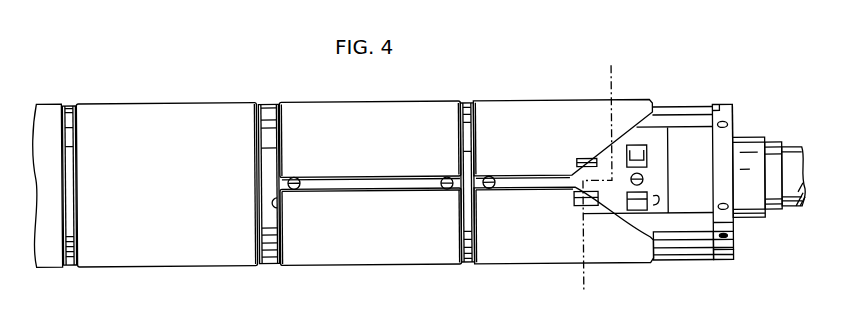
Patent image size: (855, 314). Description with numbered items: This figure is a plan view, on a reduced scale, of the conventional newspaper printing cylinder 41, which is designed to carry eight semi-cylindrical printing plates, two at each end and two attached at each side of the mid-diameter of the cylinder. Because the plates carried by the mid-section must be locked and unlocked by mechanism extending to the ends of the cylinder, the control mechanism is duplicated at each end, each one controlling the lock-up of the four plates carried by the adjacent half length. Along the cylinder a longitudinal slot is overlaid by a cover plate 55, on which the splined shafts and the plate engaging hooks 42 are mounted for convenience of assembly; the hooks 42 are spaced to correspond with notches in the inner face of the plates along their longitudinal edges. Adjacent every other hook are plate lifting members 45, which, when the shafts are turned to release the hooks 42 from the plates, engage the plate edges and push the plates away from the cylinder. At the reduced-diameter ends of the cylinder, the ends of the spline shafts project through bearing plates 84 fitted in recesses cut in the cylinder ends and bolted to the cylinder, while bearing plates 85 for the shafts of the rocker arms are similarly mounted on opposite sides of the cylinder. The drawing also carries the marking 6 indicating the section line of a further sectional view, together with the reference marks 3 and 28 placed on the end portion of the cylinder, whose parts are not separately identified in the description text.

The tool housing 3 is at (668, 98).
The section line 6- 6 is at (612, 70).
The drive shaft 28 is at (783, 147).
The cylinder 41 is at (667, 243).
The plate engaging hooks 42 is at (645, 158).
The plate lifting members 45 is at (628, 203).
The cover plate 55 is at (660, 181).
The bearing plates 84 is at (718, 105).
The bearing plates 85 is at (731, 135).